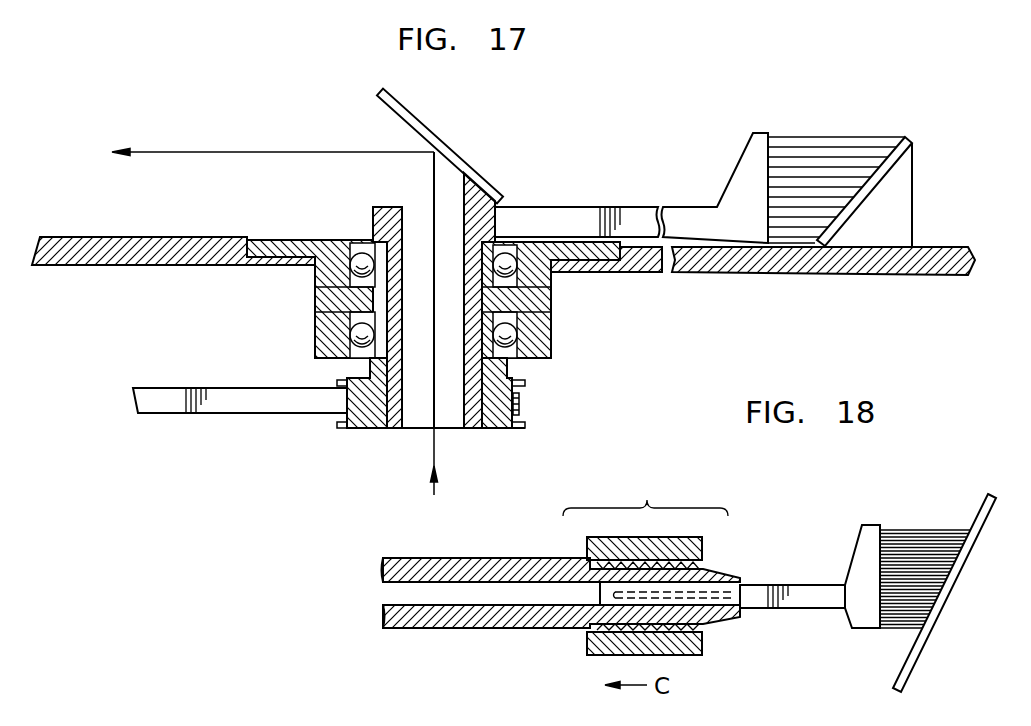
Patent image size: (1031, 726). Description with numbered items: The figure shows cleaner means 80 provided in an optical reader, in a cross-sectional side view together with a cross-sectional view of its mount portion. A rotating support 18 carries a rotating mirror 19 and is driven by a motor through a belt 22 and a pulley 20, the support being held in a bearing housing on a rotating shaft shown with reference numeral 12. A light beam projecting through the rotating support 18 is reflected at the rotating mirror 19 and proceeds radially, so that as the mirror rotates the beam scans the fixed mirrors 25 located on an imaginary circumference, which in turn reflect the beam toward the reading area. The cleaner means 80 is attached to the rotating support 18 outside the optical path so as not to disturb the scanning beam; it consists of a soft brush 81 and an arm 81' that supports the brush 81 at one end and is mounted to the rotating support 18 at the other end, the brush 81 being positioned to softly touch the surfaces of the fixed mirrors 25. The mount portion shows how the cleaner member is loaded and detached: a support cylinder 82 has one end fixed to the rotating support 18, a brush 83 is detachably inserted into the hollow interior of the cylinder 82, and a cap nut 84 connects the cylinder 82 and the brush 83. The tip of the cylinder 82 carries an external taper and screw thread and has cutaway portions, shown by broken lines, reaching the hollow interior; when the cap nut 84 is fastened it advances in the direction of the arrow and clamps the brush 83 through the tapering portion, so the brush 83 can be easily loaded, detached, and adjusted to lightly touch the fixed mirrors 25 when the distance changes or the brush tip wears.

In FIG. 17, the shaft 12 is at (433, 462).
In FIG. 17, the rotating support 18 is at (470, 428).
In FIG. 17, the rotating mirror 19 is at (488, 186).
In FIG. 17, the pulley 20 is at (520, 402).
In FIG. 17, the belt 22 is at (253, 410).
In FIG. 17, the fixed mirror 25 is at (908, 135).
In FIG. 18, the fixed mirror 25 is at (925, 632).
In FIG. 17, the cleaner means 80 is at (793, 117).
In FIG. 18, the cleaner means 80 is at (645, 494).
In FIG. 17, the soft brush 81 is at (836, 169).
In FIG. 18, the soft brush 81 is at (925, 559).
In FIG. 17, the arm 81' is at (577, 202).
In FIG. 18, the support cylinder 82 is at (486, 572).
In FIG. 18, the brush 83 is at (800, 608).
In FIG. 18, the cap nut 84 is at (615, 650).